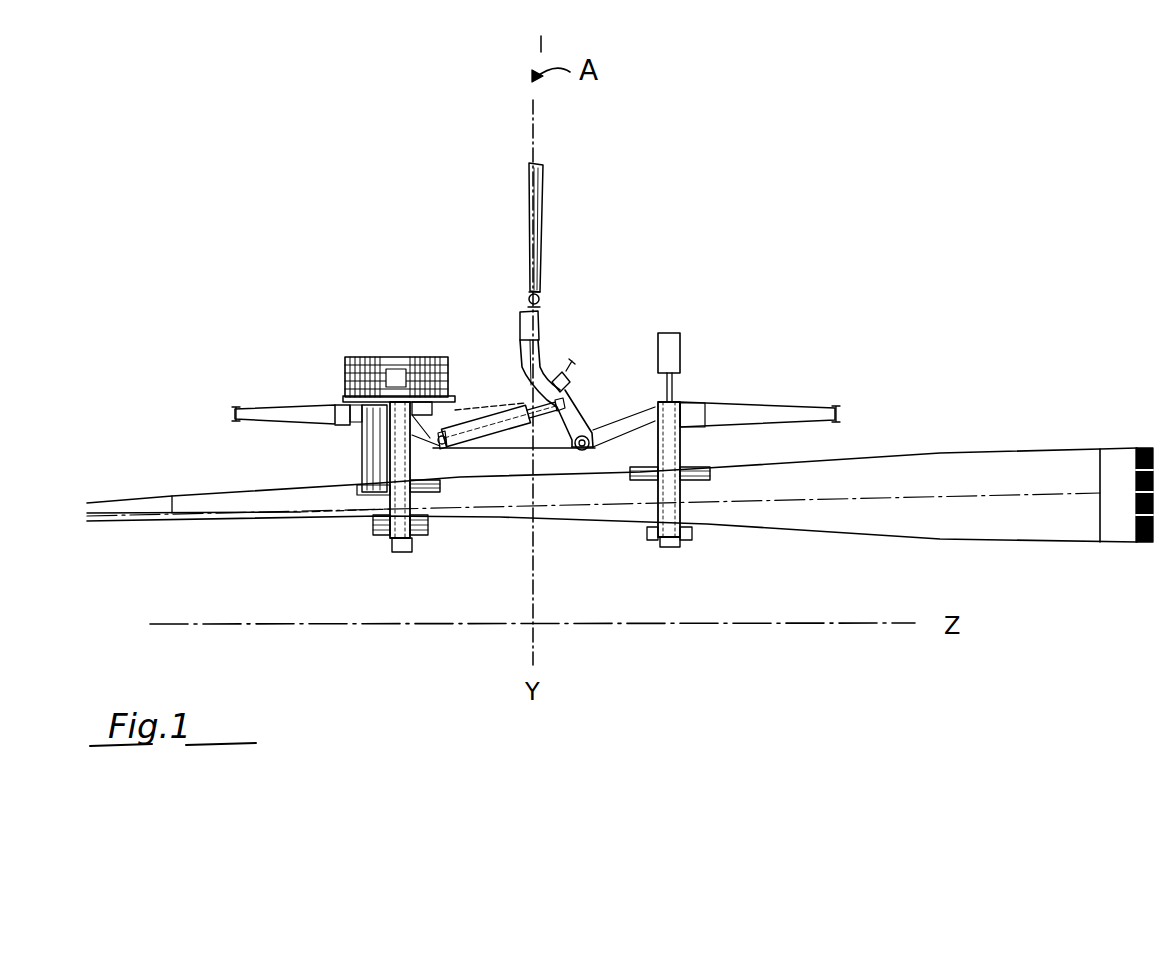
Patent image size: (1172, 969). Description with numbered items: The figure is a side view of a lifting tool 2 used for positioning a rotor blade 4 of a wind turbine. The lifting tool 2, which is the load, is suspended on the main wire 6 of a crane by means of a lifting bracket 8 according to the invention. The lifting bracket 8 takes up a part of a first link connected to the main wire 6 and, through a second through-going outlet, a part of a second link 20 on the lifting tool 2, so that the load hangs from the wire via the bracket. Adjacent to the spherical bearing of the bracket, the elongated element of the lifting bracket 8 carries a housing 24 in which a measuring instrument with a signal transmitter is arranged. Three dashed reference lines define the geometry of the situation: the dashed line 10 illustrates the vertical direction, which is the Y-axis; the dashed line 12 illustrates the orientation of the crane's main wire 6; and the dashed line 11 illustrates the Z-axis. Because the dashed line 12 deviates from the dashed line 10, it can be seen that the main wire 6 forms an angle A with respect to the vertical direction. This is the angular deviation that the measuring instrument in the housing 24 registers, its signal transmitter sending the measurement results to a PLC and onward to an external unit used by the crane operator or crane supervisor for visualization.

The lifting tool 2 is at (602, 361).
The rotor blade 4 is at (750, 490).
The main wire 6 is at (544, 243).
The lifting bracket 8 is at (540, 300).
The dashed line (vertical direction) 10 is at (533, 548).
The dashed line (Z-axis) 11 is at (788, 626).
The dashed line (main wire orientation) 12 is at (540, 113).
The second link 20 is at (520, 317).
The housing 24 is at (541, 306).